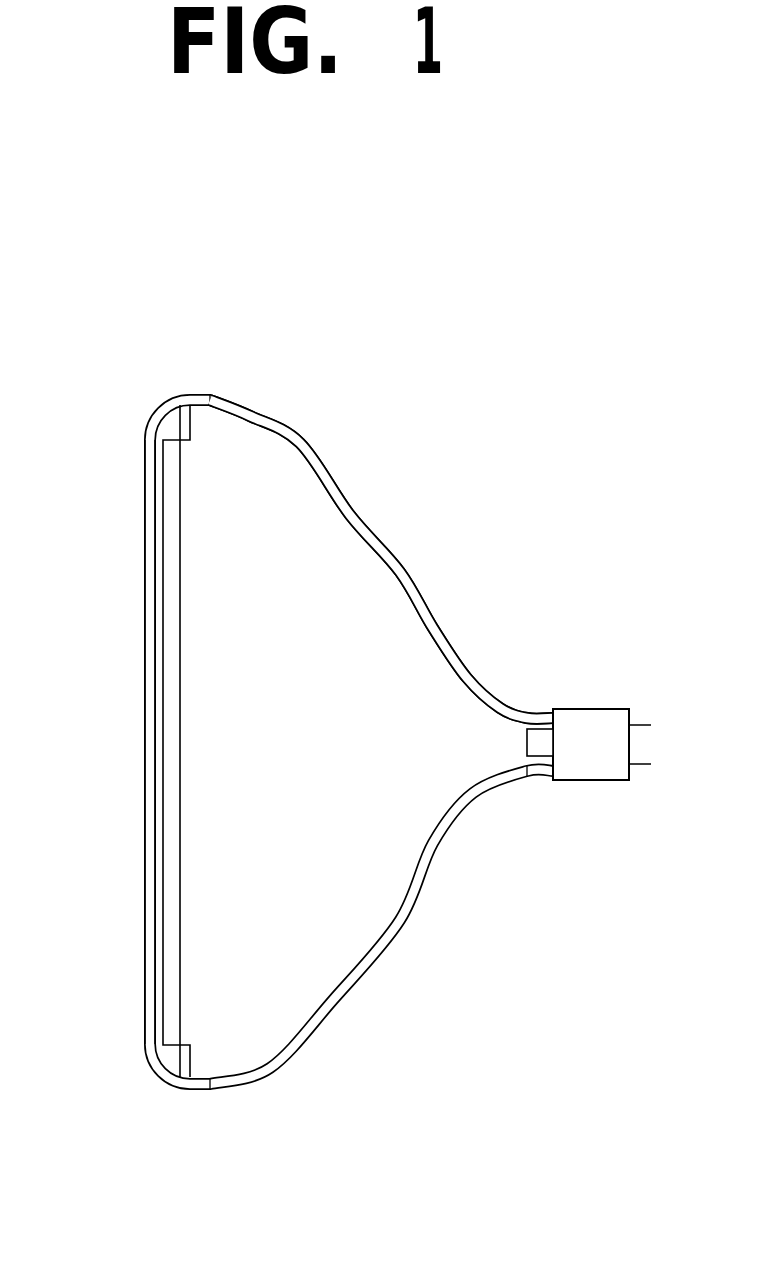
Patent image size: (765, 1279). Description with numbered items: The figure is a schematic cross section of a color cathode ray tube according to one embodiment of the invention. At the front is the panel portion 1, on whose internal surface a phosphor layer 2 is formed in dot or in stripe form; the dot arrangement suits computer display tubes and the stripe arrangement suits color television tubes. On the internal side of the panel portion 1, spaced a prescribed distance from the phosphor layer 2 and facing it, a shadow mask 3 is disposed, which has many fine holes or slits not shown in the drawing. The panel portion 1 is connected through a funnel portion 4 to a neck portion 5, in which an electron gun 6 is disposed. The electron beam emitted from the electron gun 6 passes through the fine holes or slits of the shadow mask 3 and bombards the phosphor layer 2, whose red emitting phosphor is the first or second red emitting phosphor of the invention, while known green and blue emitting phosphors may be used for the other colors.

The panel portion 1 is at (158, 408).
The phosphor layer 2 is at (155, 796).
The shadow mask 3 is at (181, 697).
The funnel portion 4 is at (395, 540).
The neck portion 5 is at (585, 781).
The electron gun 6 is at (538, 741).